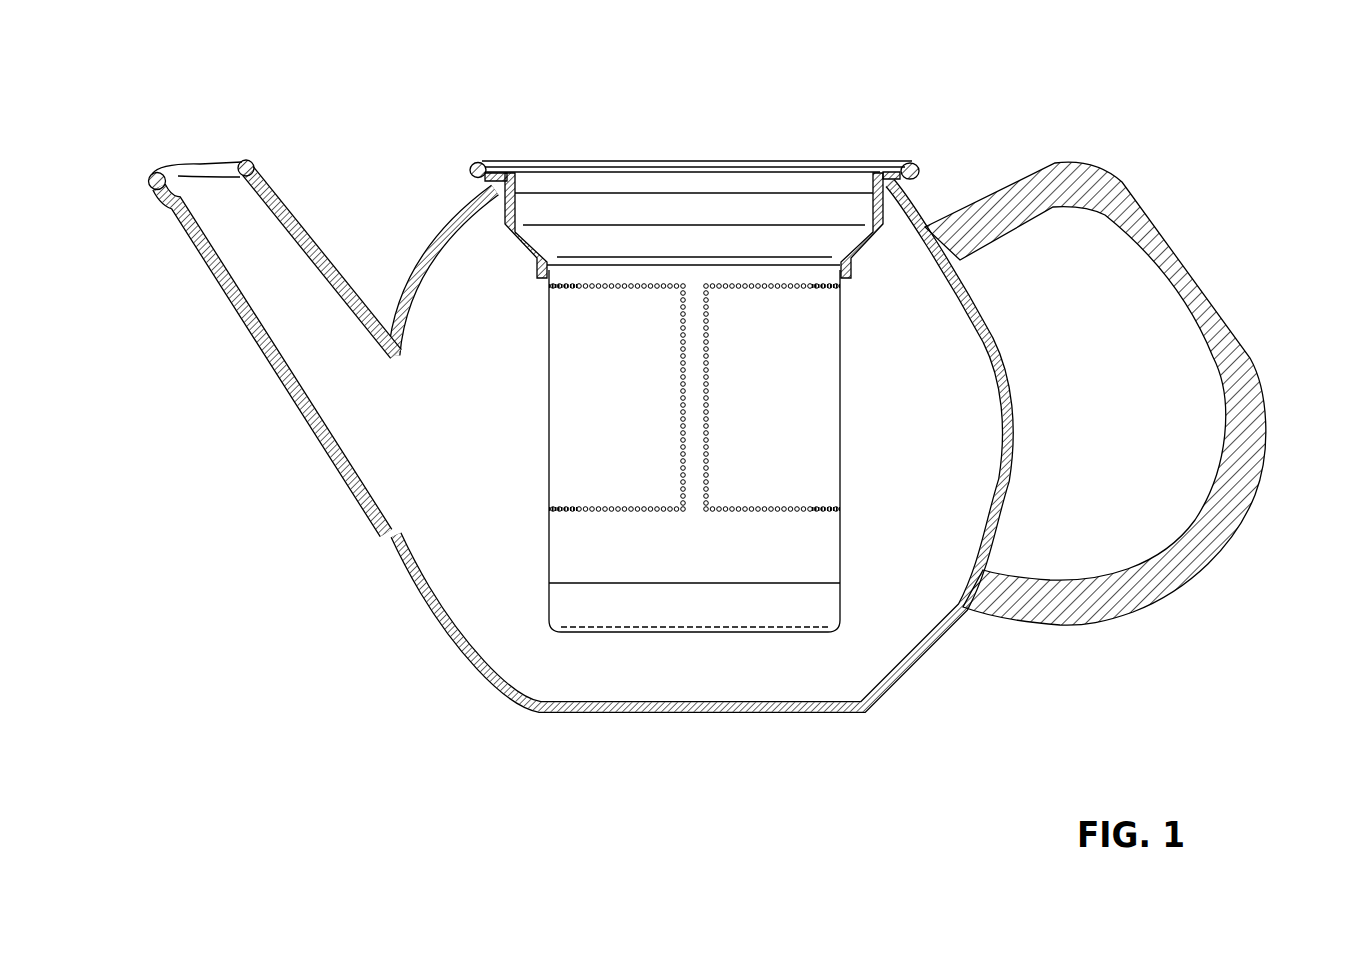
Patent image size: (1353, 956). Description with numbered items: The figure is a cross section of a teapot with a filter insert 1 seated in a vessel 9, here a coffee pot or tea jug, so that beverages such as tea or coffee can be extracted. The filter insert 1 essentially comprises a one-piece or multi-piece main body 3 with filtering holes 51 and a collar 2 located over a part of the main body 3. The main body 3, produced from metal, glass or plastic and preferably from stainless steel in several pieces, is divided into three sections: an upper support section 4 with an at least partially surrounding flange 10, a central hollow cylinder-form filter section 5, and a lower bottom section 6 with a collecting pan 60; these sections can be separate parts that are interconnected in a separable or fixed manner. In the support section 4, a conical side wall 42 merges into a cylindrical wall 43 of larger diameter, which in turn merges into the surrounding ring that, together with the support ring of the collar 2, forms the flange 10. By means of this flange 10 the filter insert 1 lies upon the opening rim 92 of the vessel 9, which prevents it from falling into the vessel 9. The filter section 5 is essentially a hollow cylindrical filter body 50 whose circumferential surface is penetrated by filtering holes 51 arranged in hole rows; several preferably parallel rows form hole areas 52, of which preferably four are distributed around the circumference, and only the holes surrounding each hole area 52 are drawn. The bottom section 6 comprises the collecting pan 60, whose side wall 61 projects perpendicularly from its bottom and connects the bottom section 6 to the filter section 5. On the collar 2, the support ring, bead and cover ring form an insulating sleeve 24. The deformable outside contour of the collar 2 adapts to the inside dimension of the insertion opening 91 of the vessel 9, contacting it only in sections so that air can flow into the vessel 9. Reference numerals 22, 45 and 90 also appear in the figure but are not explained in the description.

The filter insert 1 is at (537, 533).
The collar 2 is at (893, 172).
The main body 3 is at (540, 390).
The support section 4 is at (868, 258).
The filter section 5 is at (850, 437).
The bottom section 6 is at (842, 640).
The vessel 9 is at (545, 713).
The flange 10 is at (914, 165).
The spout 22 is at (492, 185).
The insulating sleeve 24 is at (475, 197).
The conical side wall 42 is at (838, 230).
The cylindrical wall 43 is at (885, 180).
The lid cover 45 is at (705, 210).
The filter body 50 is at (733, 567).
The filtering holes 51 is at (647, 510).
The hole areas 52 is at (615, 473).
The collecting pan 60 is at (763, 633).
The side wall 61 is at (845, 606).
The handle 90 is at (1128, 213).
The insertion opening 91 is at (490, 163).
The opening rim 92 is at (918, 186).